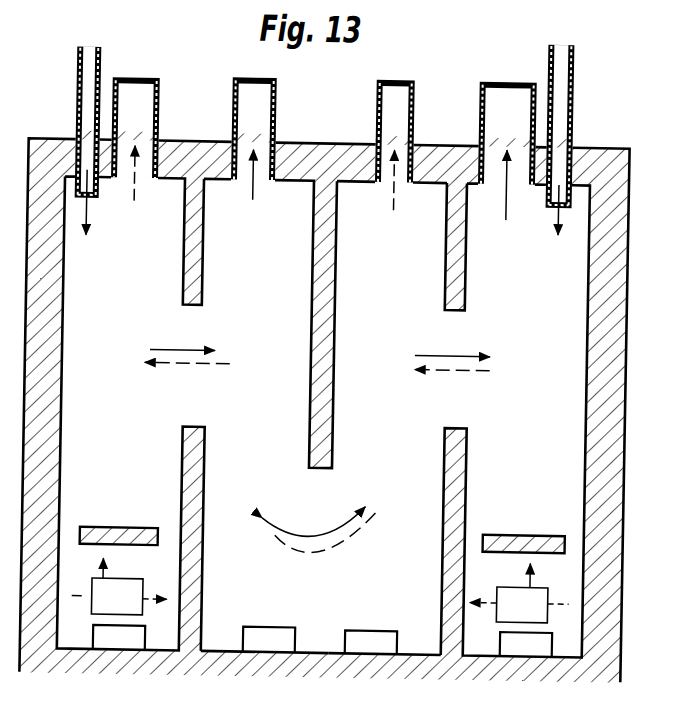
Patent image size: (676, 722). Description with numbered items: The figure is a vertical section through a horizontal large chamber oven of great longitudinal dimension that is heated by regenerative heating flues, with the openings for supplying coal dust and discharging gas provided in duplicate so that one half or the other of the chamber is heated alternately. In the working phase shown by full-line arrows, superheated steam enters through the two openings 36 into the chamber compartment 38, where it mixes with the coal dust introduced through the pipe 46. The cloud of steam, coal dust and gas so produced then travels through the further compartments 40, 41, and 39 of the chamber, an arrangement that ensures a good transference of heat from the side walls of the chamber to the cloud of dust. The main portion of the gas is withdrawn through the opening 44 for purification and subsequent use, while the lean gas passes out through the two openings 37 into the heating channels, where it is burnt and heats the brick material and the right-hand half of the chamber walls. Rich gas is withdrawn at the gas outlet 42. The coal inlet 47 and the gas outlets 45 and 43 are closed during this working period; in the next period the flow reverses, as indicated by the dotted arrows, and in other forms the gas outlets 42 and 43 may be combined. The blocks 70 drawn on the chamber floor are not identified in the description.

The heating element 36 is at (167, 531).
The heating element 37 is at (480, 545).
The end chamber 38 is at (145, 413).
The end chamber 39 is at (514, 420).
The intermediate chamber 40 is at (290, 416).
The intermediate chamber 41 is at (411, 418).
The inlet pipe 42 is at (253, 122).
The inlet pipe 43 is at (395, 128).
The inlet pipe 44 is at (506, 151).
The inlet pipe 45 is at (129, 92).
The outlet tube 46 is at (84, 60).
The outlet tube 47 is at (556, 63).
The support block 70 is at (123, 644).